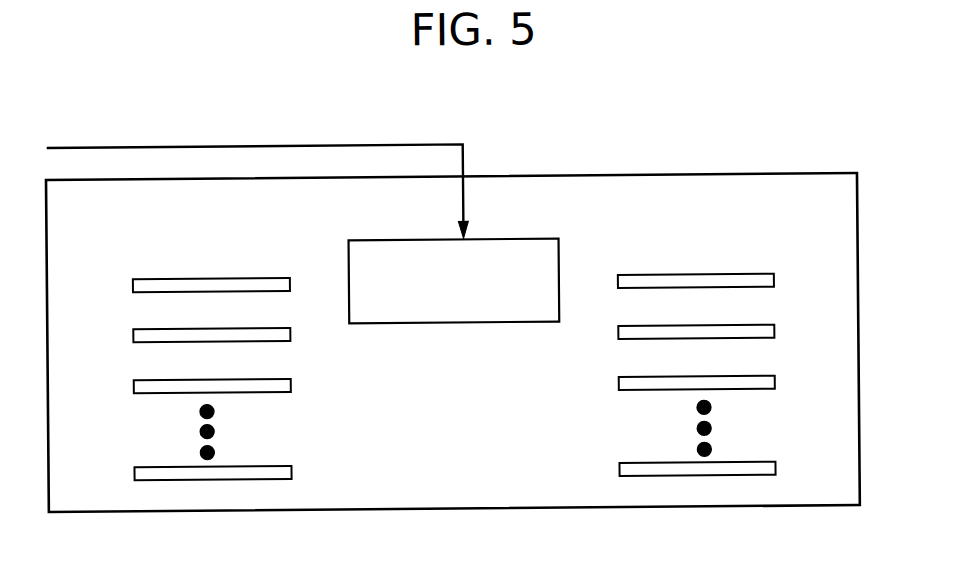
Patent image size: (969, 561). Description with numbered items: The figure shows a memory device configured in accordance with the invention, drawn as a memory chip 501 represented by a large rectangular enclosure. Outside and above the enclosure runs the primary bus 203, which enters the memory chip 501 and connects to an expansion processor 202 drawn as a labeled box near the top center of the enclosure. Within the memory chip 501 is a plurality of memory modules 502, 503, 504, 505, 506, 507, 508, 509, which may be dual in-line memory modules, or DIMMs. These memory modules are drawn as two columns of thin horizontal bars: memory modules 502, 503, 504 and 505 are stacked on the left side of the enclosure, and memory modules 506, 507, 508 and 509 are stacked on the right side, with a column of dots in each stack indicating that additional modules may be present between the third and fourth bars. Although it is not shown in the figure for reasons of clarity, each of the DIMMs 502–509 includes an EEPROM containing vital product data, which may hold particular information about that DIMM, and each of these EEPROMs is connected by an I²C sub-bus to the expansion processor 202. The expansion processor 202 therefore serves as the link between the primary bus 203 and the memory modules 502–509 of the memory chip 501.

The primary bus 203 is at (177, 118).
The memory chip 501 is at (747, 159).
The expansion processor 202 is at (512, 242).
The memory module 502 is at (132, 282).
The memory module 503 is at (132, 332).
The memory module 504 is at (132, 383).
The memory module 505 is at (132, 470).
The memory module 506 is at (795, 268).
The memory module 507 is at (795, 319).
The memory module 508 is at (775, 383).
The memory module 509 is at (775, 469).